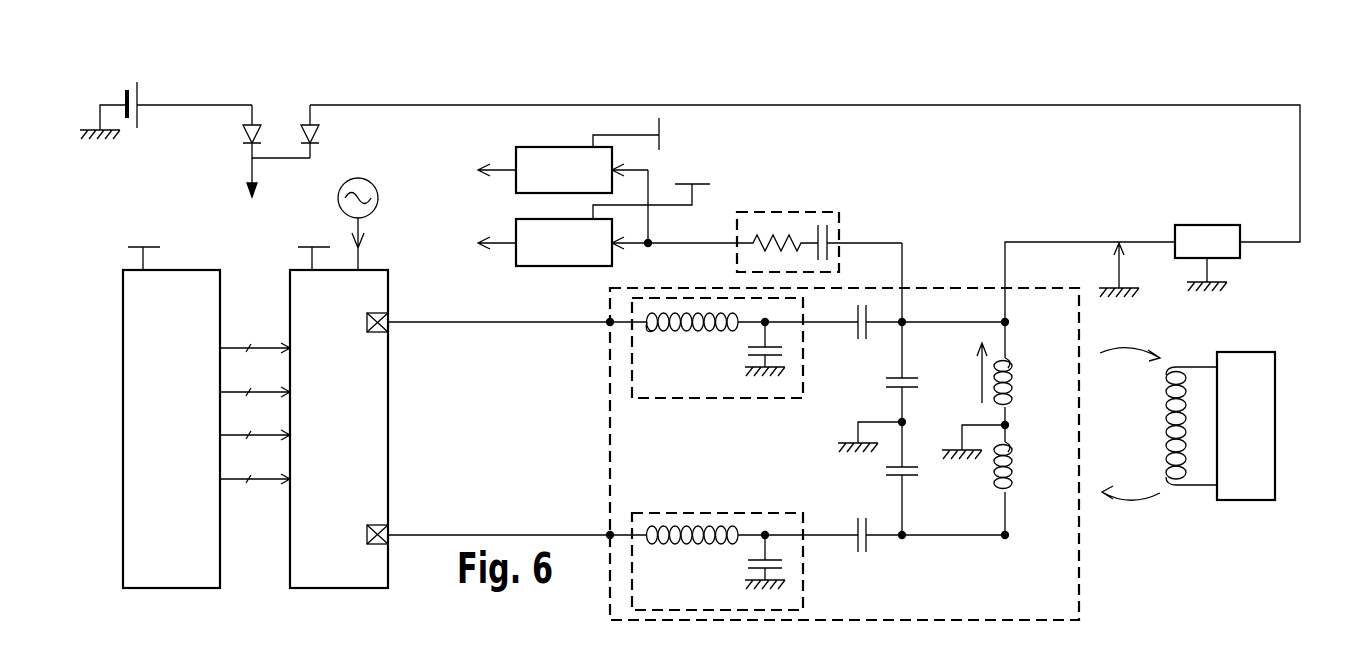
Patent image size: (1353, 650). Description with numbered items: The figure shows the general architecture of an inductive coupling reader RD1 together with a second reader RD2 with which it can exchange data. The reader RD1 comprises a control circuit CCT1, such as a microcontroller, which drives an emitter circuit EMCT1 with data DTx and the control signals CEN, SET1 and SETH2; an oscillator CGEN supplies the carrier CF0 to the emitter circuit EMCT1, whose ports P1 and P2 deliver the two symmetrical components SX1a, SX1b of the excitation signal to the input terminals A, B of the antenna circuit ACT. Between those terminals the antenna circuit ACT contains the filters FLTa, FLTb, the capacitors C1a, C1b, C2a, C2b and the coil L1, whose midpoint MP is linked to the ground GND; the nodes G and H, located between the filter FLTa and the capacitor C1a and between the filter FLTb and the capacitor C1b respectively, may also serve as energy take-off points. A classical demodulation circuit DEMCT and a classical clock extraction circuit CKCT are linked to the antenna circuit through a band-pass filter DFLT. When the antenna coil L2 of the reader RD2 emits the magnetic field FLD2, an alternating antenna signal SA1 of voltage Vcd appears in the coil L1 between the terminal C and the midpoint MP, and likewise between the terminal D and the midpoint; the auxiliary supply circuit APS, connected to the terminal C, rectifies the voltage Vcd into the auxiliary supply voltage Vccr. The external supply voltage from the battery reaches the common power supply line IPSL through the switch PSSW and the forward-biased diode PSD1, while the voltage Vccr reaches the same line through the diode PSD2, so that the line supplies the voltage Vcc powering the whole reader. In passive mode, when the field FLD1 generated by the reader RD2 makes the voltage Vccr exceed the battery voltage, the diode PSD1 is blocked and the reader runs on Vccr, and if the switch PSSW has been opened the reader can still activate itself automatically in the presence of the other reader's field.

The switch PSSW is at (190, 104).
The auxiliary supply voltage Vccr is at (749, 160).
The diode PSD1 is at (242, 133).
The diode PSD2 is at (320, 133).
The power supply line IPSL is at (250, 180).
The supply voltage Vcc is at (417, 194).
The oscillator CGEN is at (378, 200).
The carrier CF0 is at (378, 244).
The control circuit CCT1 is at (199, 435).
The emitter circuit EMCT1 is at (378, 435).
The data DTx is at (255, 338).
The control signal CEN is at (255, 382).
The control signal SET1 is at (255, 425).
The control signal SETH2 is at (255, 469).
The port P1 is at (366, 322).
The port P2 is at (366, 535).
The excitation signal component SX1a is at (517, 308).
The excitation signal component SX1b is at (517, 521).
The input terminal A is at (608, 321).
The input terminal B is at (608, 534).
The antenna circuit ACT is at (1082, 585).
The filter FLTa is at (700, 398).
The filter FLTb is at (803, 598).
The capacitor C1a is at (857, 334).
The capacitor C1b is at (868, 546).
The capacitor C2a is at (888, 476).
The capacitor C2b is at (888, 388).
The node G is at (904, 318).
The node H is at (905, 531).
The terminal C is at (964, 320).
The terminal D is at (957, 549).
The coil L1 is at (1012, 367).
The midpoint MP is at (1010, 424).
The antenna signal SA1 is at (961, 373).
The antenna coil L2 is at (1165, 447).
The reader RD2 is at (1270, 435).
The magnetic field FLD1 is at (1130, 340).
The magnetic field FLD2 is at (1132, 509).
The auxiliary supply circuit APS is at (1228, 254).
The voltage Vcd is at (1133, 270).
The ground GND is at (1230, 279).
The reader RD1 is at (1208, 85).
The clock extraction circuit CKCT is at (594, 185).
The demodulation circuit DEMCT is at (603, 256).
The band-pass filter DFLT is at (802, 211).